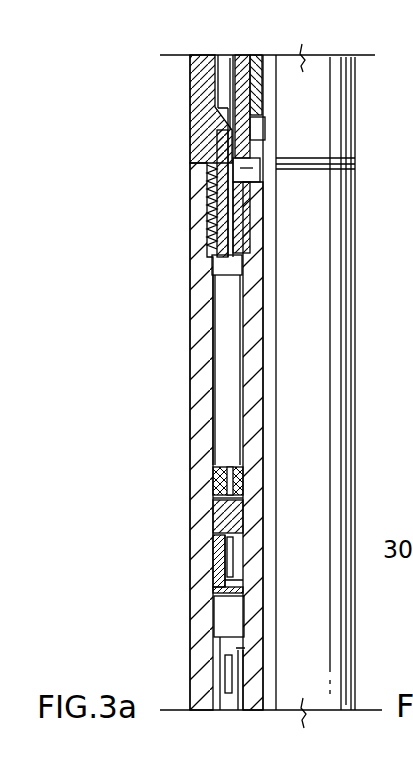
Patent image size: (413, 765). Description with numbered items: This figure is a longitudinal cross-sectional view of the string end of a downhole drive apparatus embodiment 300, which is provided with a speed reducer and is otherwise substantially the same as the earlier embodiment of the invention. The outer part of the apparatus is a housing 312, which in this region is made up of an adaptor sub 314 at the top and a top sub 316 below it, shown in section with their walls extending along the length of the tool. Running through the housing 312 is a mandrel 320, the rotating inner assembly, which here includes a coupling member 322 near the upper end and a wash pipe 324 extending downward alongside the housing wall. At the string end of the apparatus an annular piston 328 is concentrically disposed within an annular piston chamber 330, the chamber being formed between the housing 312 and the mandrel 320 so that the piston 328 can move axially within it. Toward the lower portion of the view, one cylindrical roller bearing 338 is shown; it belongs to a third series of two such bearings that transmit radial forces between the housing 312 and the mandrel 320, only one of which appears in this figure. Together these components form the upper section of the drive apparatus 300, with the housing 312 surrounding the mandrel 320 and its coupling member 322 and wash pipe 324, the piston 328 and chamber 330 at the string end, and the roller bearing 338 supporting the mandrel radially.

The downhole drive apparatus embodiment 300 is at (160, 274).
The housing 312 is at (190, 342).
The adaptor sub 314 is at (190, 114).
The top sub 316 is at (205, 240).
The mandrel 320 is at (266, 375).
The coupling member 322 is at (276, 144).
The wash pipe 324 is at (253, 438).
The annular piston 328 is at (213, 538).
The annular piston chamber 330 is at (230, 403).
The cylindrical roller bearing 338 is at (232, 668).